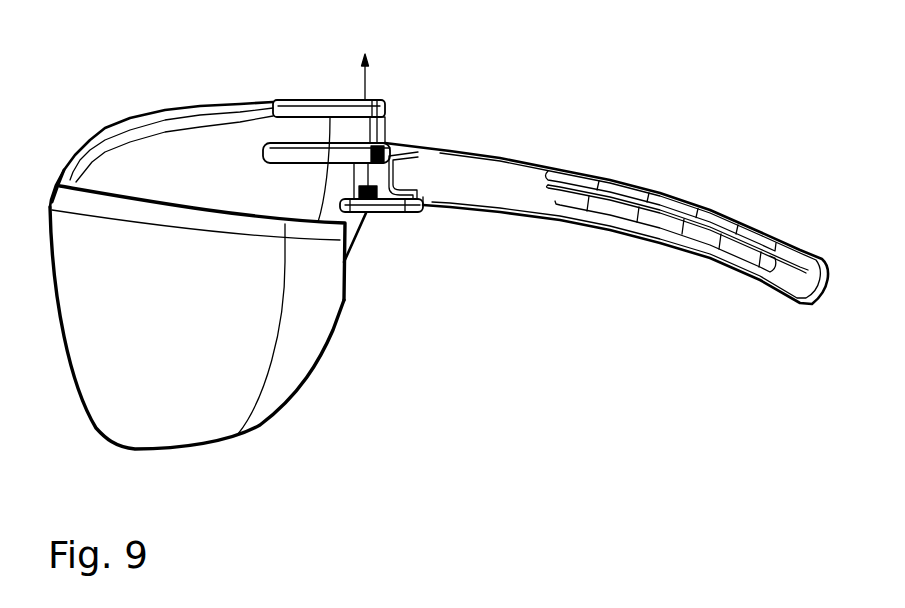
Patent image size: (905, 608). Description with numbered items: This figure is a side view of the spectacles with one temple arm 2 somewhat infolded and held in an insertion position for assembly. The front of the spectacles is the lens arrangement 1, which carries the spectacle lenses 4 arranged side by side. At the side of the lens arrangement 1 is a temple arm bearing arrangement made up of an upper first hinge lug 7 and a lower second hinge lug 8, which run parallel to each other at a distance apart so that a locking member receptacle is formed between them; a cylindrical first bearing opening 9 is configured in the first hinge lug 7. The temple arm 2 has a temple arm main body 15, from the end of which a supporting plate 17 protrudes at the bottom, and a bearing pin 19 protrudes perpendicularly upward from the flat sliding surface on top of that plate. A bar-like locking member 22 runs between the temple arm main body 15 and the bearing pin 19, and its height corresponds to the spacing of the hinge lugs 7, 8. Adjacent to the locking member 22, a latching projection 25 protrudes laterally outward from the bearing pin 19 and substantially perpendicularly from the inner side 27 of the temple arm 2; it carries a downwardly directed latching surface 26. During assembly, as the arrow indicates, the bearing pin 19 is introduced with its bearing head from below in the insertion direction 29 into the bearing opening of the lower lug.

The lens arrangement 1 is at (162, 106).
The spectacle lens 4 is at (207, 145).
The first hinge lug 7 is at (308, 106).
The second hinge lug 8 is at (285, 157).
The first bearing opening 9 is at (372, 101).
The insertion direction 29 is at (362, 84).
The locking member 22 is at (372, 176).
The inner side 27 is at (508, 178).
The temple arm 2 is at (574, 162).
The temple arm main body 15 is at (662, 186).
The latching surface 26 is at (365, 216).
The bearing pin 19 is at (368, 215).
The latching projection 25 is at (390, 215).
The supporting plate 17 is at (410, 215).